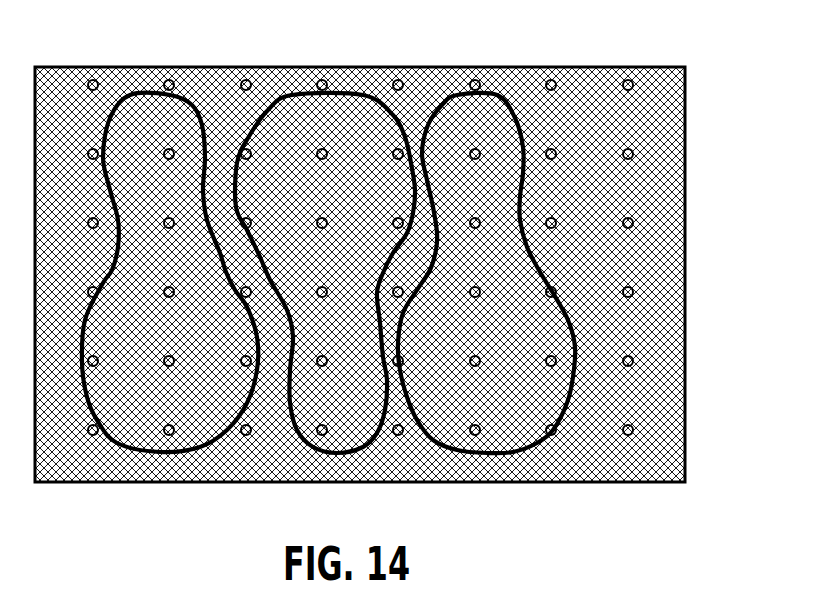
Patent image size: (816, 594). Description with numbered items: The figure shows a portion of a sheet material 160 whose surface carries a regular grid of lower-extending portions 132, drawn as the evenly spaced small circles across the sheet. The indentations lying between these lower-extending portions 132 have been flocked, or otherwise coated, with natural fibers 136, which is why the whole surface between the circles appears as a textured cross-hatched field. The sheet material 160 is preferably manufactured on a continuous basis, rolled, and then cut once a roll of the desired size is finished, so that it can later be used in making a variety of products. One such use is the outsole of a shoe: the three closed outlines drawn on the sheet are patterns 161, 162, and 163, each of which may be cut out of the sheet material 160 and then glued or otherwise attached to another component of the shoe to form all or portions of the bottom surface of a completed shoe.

The lower-extending portions 132 is at (553, 148).
The natural fibers 136 is at (645, 318).
The sheet material 160 is at (688, 273).
The pattern 161 is at (138, 95).
The pattern 162 is at (297, 95).
The pattern 163 is at (485, 95).